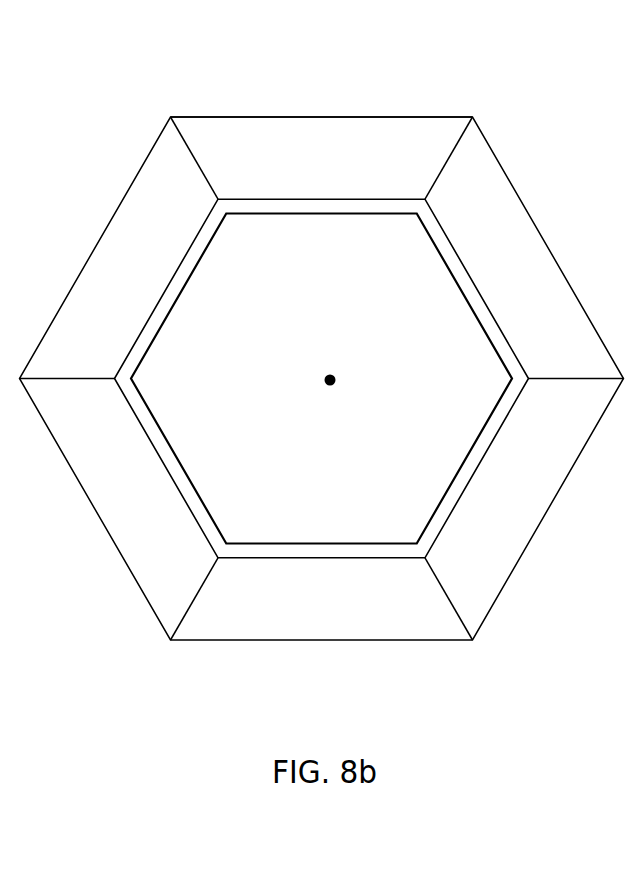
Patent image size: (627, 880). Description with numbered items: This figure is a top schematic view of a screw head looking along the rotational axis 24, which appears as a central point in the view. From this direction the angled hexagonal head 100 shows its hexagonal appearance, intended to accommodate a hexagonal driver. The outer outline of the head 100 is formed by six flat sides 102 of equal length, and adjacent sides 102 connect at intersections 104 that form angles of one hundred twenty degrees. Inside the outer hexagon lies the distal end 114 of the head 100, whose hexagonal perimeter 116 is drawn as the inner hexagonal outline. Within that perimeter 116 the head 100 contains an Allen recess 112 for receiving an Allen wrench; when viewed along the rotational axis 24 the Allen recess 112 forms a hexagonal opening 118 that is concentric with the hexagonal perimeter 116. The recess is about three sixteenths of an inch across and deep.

The angled hexagonal head 100 is at (119, 163).
The flat sides 102 is at (260, 116).
The intersections 104 is at (472, 117).
The rotational axis 24 is at (337, 380).
The Allen recess 112 is at (443, 433).
The distal end 114 is at (173, 480).
The perimeter 116 is at (192, 519).
The hexagonal opening 118 is at (325, 516).